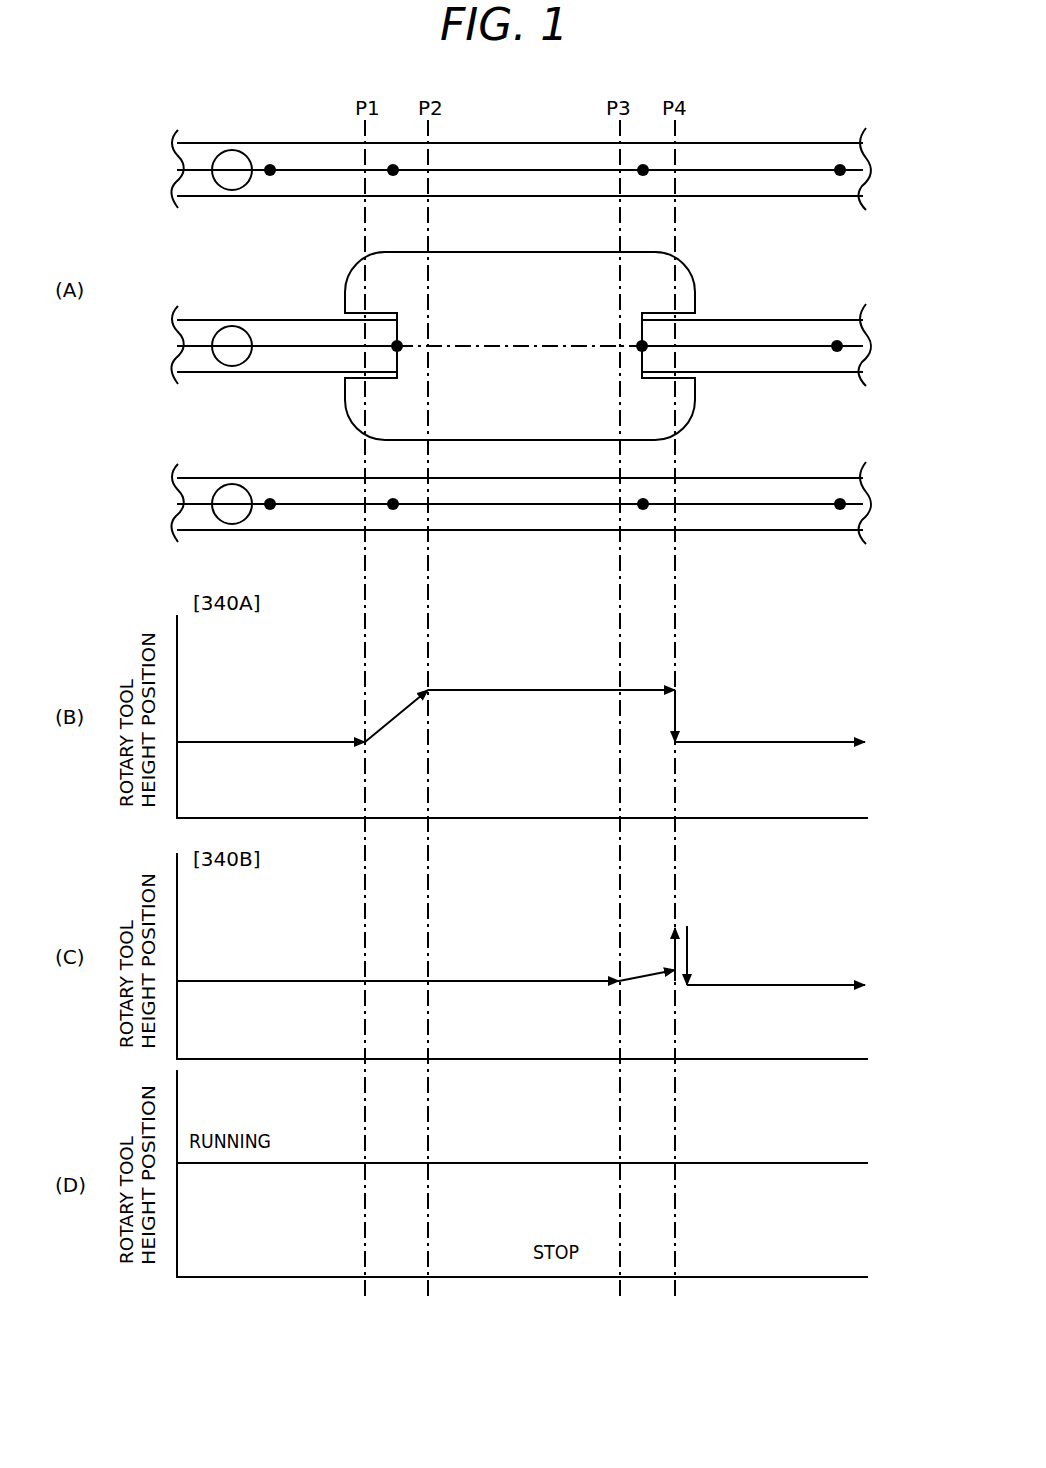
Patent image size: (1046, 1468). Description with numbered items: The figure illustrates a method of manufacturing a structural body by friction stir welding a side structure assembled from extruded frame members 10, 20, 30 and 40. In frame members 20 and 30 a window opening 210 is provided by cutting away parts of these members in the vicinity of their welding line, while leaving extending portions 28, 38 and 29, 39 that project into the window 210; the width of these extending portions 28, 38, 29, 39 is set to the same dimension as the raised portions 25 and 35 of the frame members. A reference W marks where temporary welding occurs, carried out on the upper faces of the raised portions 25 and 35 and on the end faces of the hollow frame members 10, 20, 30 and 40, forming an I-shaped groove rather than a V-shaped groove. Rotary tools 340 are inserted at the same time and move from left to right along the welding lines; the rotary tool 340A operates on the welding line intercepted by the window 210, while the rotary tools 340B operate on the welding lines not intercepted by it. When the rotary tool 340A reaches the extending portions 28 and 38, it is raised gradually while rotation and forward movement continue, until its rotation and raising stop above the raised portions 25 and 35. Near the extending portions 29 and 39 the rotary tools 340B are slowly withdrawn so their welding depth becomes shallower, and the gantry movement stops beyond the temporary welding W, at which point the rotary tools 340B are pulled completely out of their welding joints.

The extruded frame member 10 is at (843, 540).
The extruded frame member 20 is at (833, 437).
The extruded frame member 30 is at (833, 265).
The extruded frame member 40 is at (833, 113).
The raised portion 25 is at (292, 364).
The raised portion 35 is at (297, 190).
The extending portion 28 is at (383, 362).
The extending portion 29 is at (644, 376).
The extending portion 38 is at (396, 312).
The extending portion 39 is at (640, 312).
The window opening 210 is at (517, 262).
The rotary tool 340 is at (178, 297).
The rotary tool 340A is at (225, 326).
The rotary tool 340B is at (216, 149).
The temporary welding W is at (398, 346).